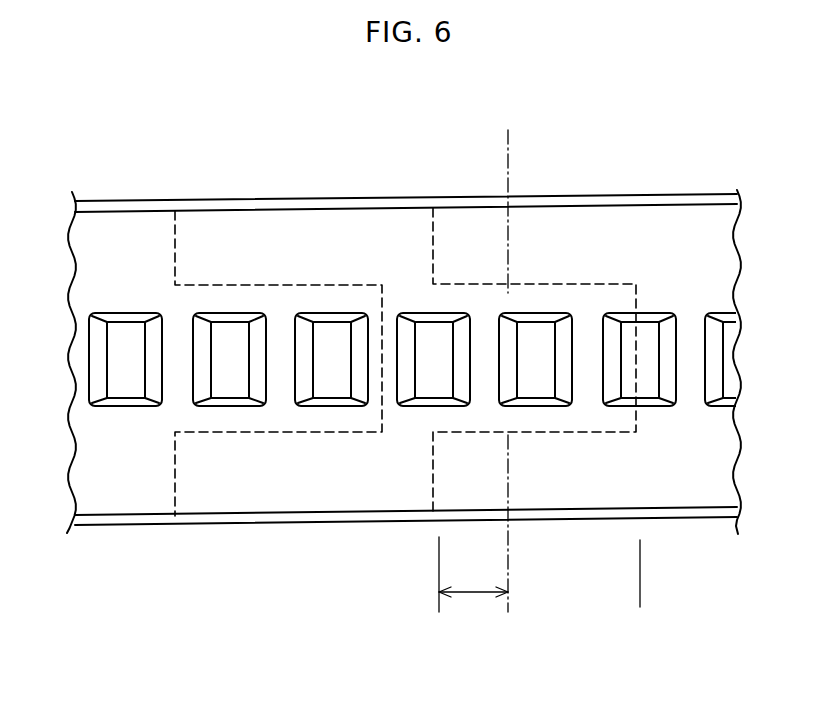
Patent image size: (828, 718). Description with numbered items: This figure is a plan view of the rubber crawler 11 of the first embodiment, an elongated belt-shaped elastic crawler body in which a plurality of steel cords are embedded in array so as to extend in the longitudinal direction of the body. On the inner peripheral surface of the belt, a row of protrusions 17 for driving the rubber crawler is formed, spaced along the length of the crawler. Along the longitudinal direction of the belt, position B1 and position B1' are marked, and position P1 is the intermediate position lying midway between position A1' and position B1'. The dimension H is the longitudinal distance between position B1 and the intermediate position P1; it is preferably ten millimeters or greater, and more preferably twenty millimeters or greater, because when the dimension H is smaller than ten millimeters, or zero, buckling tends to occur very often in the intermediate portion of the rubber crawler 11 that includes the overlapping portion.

The rubber crawler 11 is at (343, 115).
The protrusion 17 is at (647, 330).
The position P1 is at (515, 388).
The position B1 is at (442, 591).
The position B1' is at (648, 592).
The dimension H is at (473, 580).